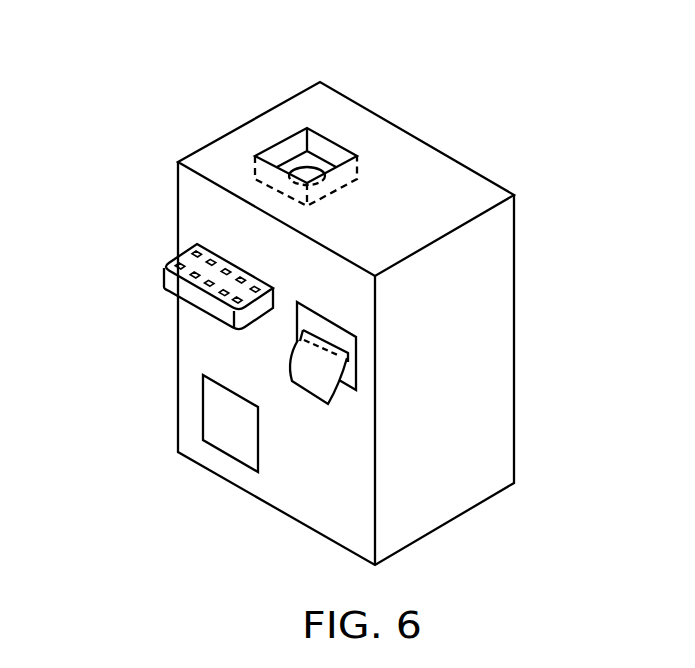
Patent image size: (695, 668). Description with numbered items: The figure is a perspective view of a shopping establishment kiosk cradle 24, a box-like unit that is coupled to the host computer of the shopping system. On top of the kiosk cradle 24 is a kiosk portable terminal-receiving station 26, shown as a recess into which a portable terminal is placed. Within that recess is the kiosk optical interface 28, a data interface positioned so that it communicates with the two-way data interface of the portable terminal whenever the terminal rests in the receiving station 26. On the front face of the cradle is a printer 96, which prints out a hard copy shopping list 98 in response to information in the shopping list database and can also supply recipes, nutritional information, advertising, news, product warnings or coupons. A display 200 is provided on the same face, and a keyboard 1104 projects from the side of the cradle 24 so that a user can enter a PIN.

The shopping establishment kiosk cradle 24 is at (514, 439).
The kiosk portable terminal-receiving station 26 is at (288, 115).
The kiosk optical interface 28 is at (305, 172).
The printer 96 is at (357, 348).
The hard copy shopping list 98 is at (320, 385).
The display 200 is at (220, 412).
The keyboard 1104 is at (163, 275).